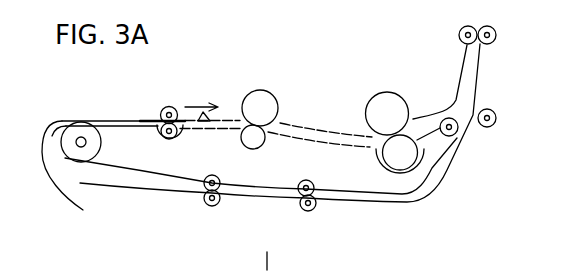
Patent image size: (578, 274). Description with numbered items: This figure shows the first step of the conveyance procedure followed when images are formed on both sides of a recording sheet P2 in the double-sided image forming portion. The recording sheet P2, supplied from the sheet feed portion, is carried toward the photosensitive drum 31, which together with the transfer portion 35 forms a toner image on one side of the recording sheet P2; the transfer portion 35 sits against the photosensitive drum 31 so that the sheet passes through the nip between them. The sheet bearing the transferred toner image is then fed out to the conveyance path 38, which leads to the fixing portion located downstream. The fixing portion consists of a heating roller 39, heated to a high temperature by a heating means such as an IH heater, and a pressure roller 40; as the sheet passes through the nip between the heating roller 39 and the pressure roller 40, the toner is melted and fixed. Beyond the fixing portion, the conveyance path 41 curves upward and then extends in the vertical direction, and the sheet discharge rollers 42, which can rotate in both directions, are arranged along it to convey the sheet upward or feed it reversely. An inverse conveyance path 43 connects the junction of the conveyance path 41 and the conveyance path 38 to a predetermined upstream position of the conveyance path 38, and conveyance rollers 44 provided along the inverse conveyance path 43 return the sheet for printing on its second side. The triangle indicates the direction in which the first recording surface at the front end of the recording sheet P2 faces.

The recording sheet P2 is at (145, 120).
The photosensitive drum 31 is at (257, 90).
The transfer portion 35 is at (241, 140).
The conveyance path 38 is at (326, 149).
The heating roller 39 is at (383, 91).
The pressure roller 40 is at (400, 170).
The conveyance path 41 is at (481, 93).
The sheet discharge rollers 42 is at (498, 35).
The inverse conveyance path 43 is at (262, 203).
The conveyance rollers 44 is at (218, 205).